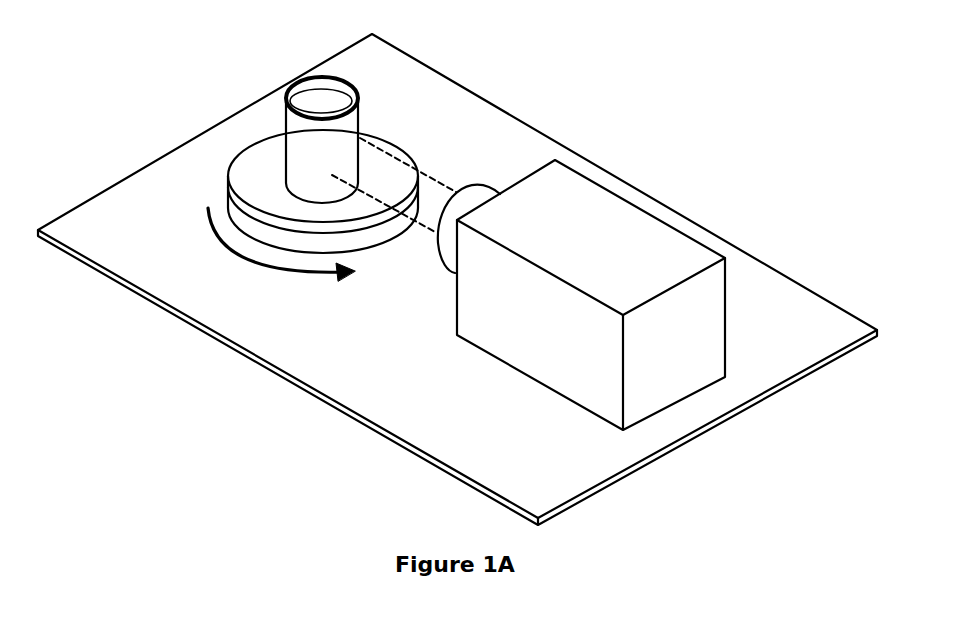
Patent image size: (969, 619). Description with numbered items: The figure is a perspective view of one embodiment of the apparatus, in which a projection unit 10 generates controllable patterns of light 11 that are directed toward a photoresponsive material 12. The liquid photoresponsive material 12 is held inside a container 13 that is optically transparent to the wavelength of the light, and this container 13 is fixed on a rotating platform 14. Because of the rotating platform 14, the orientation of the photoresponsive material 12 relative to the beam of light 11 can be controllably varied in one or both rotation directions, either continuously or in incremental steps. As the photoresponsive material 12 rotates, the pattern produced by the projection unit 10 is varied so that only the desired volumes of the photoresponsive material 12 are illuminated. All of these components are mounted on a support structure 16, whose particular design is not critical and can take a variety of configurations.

The projection unit 10 is at (600, 215).
The patterns of light 11 is at (437, 177).
The photoresponsive material 12 is at (320, 102).
The container 13 is at (300, 145).
The rotating platform 14 is at (247, 173).
The support structure 16 is at (103, 215).